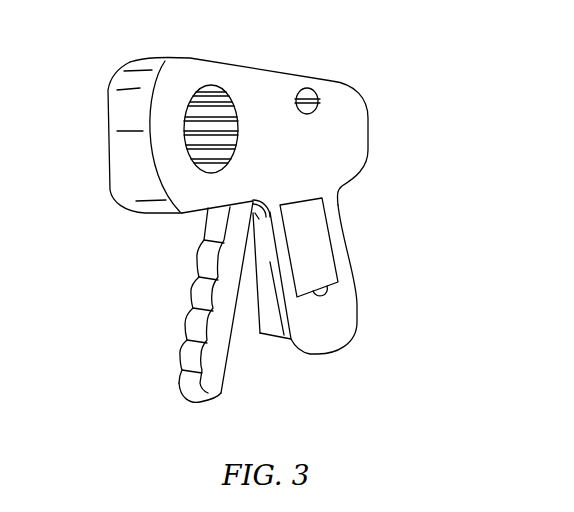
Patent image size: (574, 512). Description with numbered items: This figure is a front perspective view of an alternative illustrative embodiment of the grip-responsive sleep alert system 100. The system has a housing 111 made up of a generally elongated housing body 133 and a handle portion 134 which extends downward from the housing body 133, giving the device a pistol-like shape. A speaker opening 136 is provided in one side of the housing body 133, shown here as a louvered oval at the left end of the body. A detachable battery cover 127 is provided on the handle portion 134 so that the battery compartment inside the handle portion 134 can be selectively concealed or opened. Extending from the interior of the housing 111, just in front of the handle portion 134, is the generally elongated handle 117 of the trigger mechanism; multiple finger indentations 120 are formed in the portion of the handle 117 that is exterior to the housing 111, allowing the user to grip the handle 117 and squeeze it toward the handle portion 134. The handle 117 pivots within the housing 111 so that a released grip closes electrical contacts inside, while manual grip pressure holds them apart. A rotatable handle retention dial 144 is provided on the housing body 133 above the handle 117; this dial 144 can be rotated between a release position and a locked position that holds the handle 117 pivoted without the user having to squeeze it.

The grip-responsive sleep alert system 100 is at (411, 54).
The housing 111 is at (379, 133).
The handle 117 is at (217, 389).
The finger indentations 120 is at (174, 356).
The detachable battery cover 127 is at (313, 255).
The housing body 133 is at (116, 70).
The handle portion 134 is at (332, 325).
The speaker opening 136 is at (207, 86).
The handle retention dial 144 is at (303, 88).